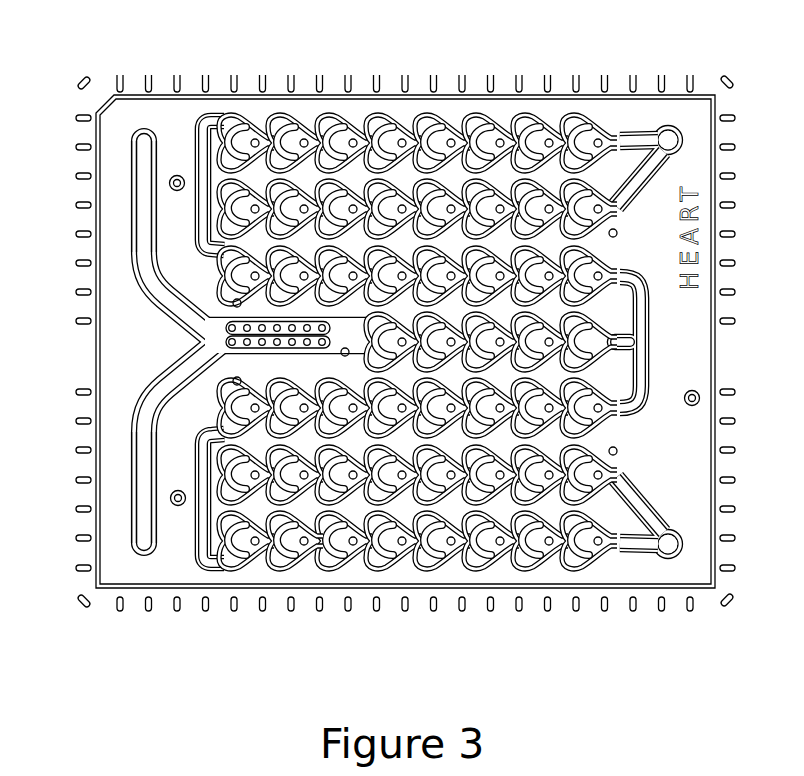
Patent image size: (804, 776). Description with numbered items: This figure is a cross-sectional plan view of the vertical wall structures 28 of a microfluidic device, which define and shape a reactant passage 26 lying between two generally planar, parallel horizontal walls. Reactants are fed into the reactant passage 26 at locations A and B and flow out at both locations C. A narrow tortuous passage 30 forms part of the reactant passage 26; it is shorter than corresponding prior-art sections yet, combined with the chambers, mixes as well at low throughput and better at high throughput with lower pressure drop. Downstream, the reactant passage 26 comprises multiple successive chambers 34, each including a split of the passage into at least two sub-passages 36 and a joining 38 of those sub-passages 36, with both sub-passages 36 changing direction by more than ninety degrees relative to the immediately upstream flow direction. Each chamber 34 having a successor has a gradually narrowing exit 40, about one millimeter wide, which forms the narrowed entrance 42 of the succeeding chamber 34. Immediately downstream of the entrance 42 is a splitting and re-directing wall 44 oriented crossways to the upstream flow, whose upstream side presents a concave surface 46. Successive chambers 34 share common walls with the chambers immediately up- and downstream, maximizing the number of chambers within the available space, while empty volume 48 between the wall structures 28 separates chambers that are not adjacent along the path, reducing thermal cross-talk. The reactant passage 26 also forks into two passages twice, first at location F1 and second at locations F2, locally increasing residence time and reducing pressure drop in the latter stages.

The reactant feed location A is at (140, 146).
The reactant feed location B is at (143, 537).
The outflow location C is at (668, 142).
The first fork location F1 is at (593, 337).
The second fork locations F2 is at (206, 205).
The reactant passage 26 is at (142, 212).
The vertical wall structures 28 is at (133, 247).
The narrow tortuous passage 30 is at (226, 327).
The successive chambers 34 is at (335, 119).
The sub-passages 36 is at (415, 550).
The joining 38 is at (460, 543).
The gradually narrowing exit 40 is at (563, 540).
The narrowed entrance 42 is at (585, 545).
The splitting and re-directing wall 44 is at (510, 542).
The concave surface 46 is at (513, 542).
The empty volume 48 is at (307, 511).